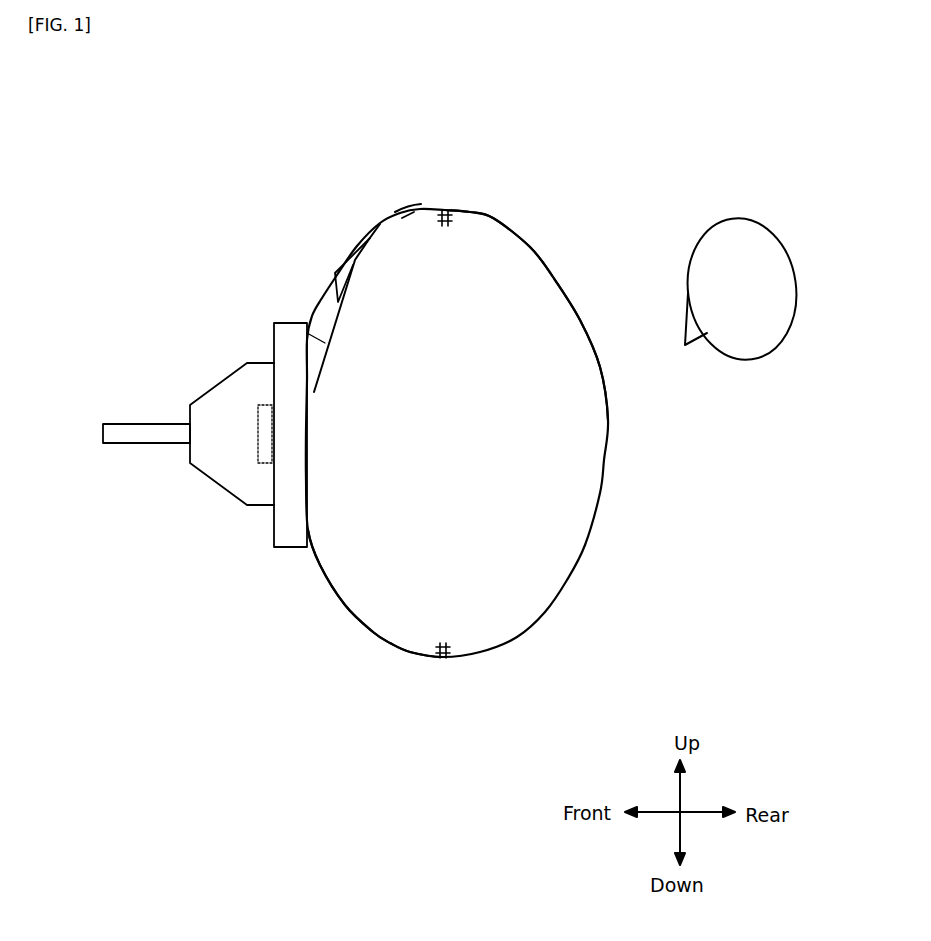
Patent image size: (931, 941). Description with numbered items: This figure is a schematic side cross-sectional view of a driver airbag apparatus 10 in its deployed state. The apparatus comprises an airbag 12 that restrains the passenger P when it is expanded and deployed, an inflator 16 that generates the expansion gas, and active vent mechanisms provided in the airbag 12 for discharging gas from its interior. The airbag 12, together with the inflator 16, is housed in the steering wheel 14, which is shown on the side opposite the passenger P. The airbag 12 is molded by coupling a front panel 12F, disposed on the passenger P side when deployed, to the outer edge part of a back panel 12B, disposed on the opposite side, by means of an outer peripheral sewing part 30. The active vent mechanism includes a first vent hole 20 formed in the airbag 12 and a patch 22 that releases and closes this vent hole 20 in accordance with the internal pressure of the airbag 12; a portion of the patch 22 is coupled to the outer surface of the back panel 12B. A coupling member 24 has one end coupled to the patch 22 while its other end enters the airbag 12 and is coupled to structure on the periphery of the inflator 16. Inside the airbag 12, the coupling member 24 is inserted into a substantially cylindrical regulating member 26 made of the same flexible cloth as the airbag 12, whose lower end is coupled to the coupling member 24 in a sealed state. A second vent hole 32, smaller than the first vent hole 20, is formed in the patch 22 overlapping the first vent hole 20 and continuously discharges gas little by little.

The driver airbag apparatus 10 is at (543, 140).
The airbag 12 is at (595, 590).
The front panel 12F is at (535, 248).
The back panel 12B is at (373, 630).
The steering wheel 14 is at (285, 550).
The inflator 16 is at (258, 420).
The first vent hole 20 is at (387, 227).
The patch 22 is at (400, 208).
The coupling member 24 is at (307, 332).
The regulating member 26 is at (355, 263).
The outer peripheral sewing part 30 is at (458, 213).
The second vent hole 32 is at (380, 223).
The passenger P is at (720, 225).